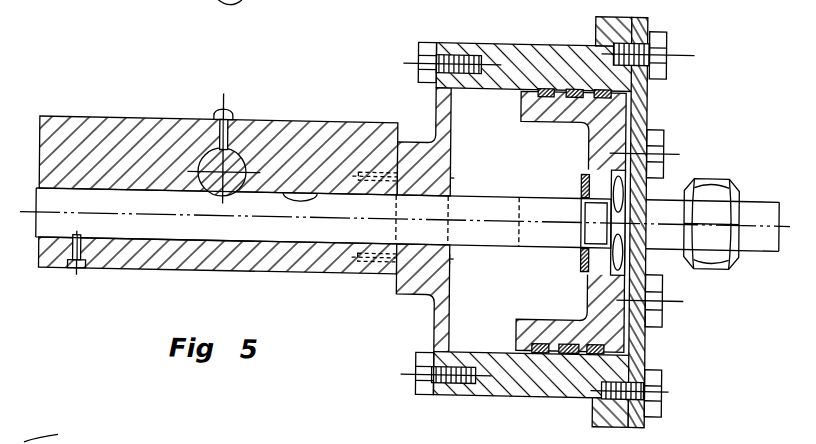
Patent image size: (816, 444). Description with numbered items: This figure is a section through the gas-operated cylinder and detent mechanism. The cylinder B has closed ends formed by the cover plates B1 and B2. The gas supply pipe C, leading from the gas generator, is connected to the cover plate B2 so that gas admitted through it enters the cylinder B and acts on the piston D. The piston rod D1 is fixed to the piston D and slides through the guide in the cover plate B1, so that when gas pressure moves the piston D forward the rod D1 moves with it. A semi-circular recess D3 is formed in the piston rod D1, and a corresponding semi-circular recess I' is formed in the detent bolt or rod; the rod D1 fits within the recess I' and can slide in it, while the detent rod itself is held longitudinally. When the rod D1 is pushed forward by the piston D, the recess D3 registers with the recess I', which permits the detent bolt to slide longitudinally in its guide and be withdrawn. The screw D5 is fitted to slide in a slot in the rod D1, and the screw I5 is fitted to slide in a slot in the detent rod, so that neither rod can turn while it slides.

The cylinder B is at (507, 53).
The cover plate B1 is at (412, 150).
The cover plate B2 is at (636, 339).
The gas supply pipe C is at (756, 195).
The piston D is at (556, 107).
The piston rod D1 is at (110, 195).
The semi-circular recess D3 is at (300, 193).
The screw D5 is at (78, 276).
The semi-circular recess I' is at (224, 224).
The screw I5 is at (228, 113).